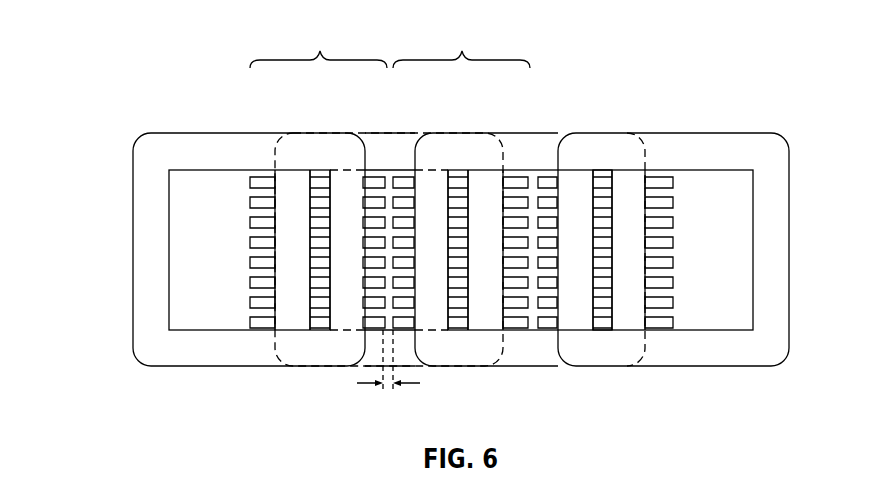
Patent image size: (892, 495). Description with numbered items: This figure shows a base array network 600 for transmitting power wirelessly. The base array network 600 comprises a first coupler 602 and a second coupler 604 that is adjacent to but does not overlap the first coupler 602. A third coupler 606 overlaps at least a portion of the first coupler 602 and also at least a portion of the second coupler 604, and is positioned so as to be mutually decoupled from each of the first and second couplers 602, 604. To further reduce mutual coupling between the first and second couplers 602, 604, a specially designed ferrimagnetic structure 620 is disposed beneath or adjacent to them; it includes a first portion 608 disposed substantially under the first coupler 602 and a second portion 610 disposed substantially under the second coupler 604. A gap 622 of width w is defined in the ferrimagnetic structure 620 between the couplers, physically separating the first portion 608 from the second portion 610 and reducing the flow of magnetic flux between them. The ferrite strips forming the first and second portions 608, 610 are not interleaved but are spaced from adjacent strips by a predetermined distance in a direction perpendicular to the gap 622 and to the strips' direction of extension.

The base array network 600 is at (108, 72).
The first coupler 602 is at (210, 150).
The second coupler 604 is at (530, 140).
The third coupler 606 is at (387, 140).
The first portion 608 is at (318, 44).
The second portion 610 is at (461, 44).
The ferrimagnetic structure 620 is at (245, 177).
The gap 622 is at (372, 383).